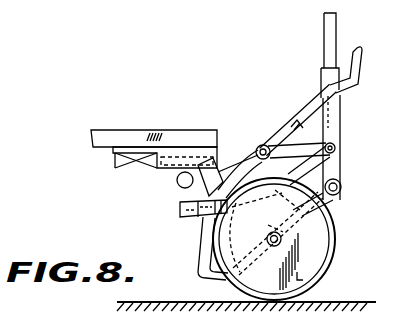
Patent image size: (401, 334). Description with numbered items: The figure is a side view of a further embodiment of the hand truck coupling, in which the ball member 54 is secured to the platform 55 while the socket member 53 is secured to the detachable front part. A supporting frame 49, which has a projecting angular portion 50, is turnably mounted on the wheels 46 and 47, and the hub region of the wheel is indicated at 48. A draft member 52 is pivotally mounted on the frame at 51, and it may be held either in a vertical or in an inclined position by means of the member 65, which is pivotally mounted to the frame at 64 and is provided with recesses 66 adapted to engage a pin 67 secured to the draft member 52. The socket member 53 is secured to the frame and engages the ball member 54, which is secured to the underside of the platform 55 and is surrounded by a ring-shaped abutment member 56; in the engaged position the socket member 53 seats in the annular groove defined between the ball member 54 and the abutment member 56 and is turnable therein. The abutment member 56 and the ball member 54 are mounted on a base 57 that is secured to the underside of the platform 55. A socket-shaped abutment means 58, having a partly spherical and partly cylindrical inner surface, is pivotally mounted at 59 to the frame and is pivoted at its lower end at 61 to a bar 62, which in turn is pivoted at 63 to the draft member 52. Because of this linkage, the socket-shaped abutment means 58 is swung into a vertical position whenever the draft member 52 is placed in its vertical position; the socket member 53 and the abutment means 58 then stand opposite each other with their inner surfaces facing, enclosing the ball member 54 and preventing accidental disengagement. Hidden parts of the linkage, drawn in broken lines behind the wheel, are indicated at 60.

The wheel 46 is at (320, 258).
The wheel 47 is at (300, 277).
The wheel hub axle 48 is at (281, 238).
The supporting frame 49 is at (205, 221).
The projecting angular portion 50 is at (198, 270).
The pivot of draft member 51 is at (341, 187).
The draft member 52 is at (327, 62).
The socket member 53 is at (222, 168).
The ball member 54 is at (177, 179).
The platform 55 is at (113, 128).
The ring-shaped abutment member 56 is at (128, 159).
The base 57 is at (182, 148).
The socket-shaped abutment means 58 is at (180, 201).
The pivot of abutment means 59 is at (182, 207).
The hidden plate 60 is at (234, 237).
The lower pivot of abutment means 61 is at (266, 214).
The bar 62 is at (278, 233).
The pivot of bar to draft member 63 is at (338, 148).
The pivot of locking member 64 is at (279, 140).
The member with recesses 65 is at (319, 102).
The recesses 66 is at (291, 128).
The pin 67 is at (341, 98).